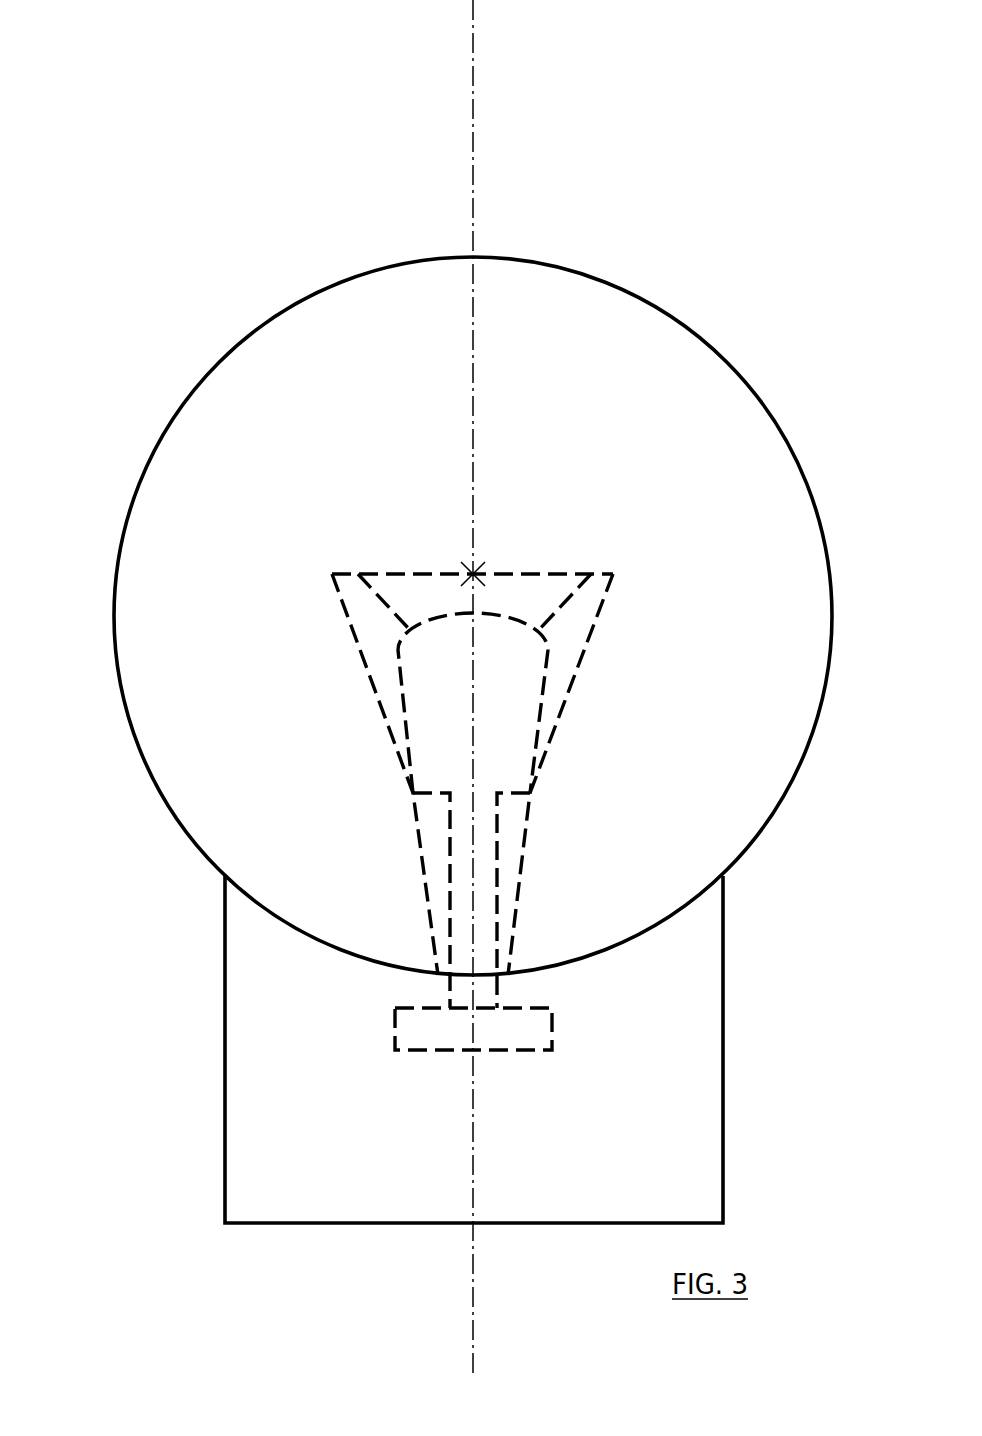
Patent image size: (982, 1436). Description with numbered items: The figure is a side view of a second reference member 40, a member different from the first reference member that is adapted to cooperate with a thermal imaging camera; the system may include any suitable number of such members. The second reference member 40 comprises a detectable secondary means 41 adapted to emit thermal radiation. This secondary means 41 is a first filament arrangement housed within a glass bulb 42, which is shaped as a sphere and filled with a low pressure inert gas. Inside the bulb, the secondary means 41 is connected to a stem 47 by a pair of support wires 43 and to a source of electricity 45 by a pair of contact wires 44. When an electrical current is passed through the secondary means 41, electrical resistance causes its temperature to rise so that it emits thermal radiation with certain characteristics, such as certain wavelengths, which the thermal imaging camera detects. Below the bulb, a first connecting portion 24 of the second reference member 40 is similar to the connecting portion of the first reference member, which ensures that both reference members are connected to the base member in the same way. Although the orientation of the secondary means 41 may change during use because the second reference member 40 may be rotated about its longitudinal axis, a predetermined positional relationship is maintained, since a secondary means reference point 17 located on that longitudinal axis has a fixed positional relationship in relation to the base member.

The second reference member 40 is at (537, 243).
The secondary means reference point 17 is at (483, 570).
The secondary means 41 is at (388, 574).
The glass bulb 42 is at (370, 271).
The support wires 43 is at (390, 608).
The contact wires 44 is at (392, 732).
The source of electricity 45 is at (536, 1030).
The stem 47 is at (503, 663).
The first connecting portion 24 is at (302, 1183).